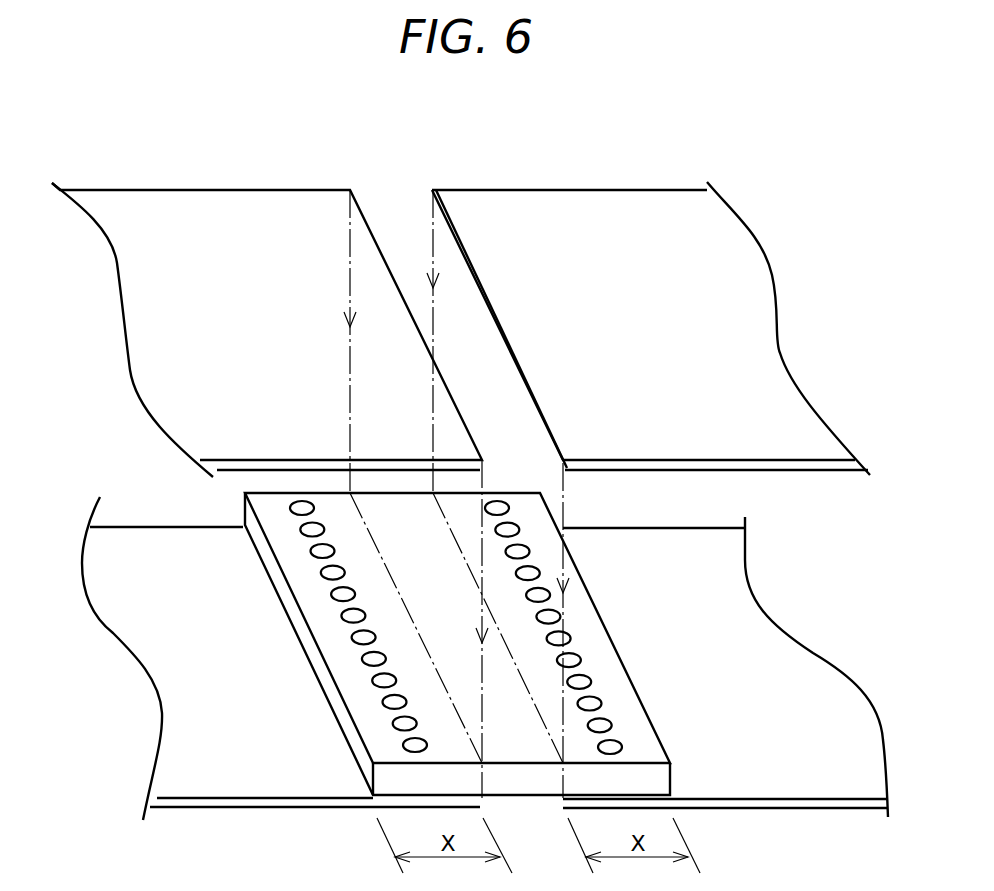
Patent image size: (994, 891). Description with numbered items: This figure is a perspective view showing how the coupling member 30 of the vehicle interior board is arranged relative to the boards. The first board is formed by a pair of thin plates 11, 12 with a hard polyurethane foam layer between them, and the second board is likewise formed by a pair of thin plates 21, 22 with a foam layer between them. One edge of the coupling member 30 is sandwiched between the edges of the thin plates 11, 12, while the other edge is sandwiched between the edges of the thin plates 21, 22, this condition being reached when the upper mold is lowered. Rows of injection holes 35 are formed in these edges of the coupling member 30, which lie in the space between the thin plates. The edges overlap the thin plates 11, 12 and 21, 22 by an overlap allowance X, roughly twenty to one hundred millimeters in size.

The thin plate 11 is at (740, 260).
The thin plate 12 is at (795, 673).
The thin plate 21 is at (163, 360).
The thin plate 22 is at (208, 753).
The coupling member 30 is at (382, 737).
The injection holes 35 is at (333, 575).